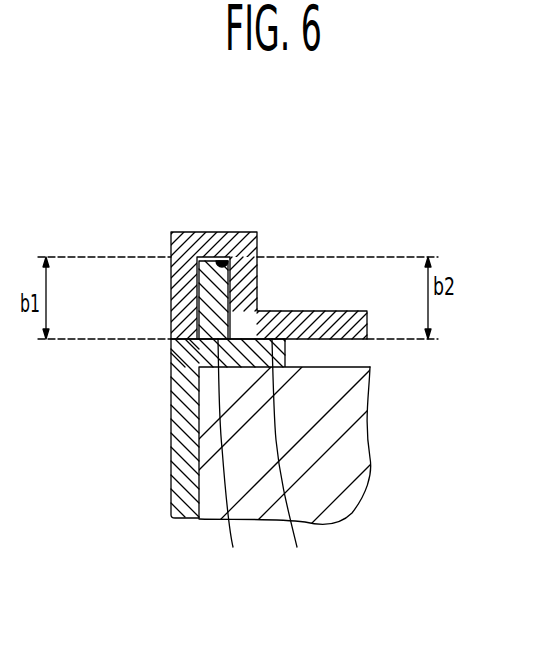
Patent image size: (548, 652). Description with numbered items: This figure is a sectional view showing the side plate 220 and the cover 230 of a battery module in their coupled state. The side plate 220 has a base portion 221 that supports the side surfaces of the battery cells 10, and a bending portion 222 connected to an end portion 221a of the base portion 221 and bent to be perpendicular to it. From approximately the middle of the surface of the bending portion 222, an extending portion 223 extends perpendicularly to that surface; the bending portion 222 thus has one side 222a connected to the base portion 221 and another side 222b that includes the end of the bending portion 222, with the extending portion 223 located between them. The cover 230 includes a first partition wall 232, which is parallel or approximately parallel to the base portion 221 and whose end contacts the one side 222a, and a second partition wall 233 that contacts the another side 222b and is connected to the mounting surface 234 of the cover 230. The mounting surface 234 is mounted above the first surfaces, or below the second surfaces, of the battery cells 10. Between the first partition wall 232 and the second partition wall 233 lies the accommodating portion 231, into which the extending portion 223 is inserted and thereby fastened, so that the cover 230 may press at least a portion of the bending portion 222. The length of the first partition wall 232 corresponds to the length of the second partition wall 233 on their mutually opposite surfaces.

The battery cells 10 is at (326, 443).
The side plate 220 is at (160, 478).
The base portion 221 is at (170, 433).
The end portion 221a is at (170, 339).
The bending portion 222 is at (265, 481).
The one side 222a is at (234, 459).
The another side 222b is at (296, 459).
The extending portion 223 is at (197, 287).
The cover 230 is at (265, 251).
The accommodating portion 231 is at (250, 256).
The first partition wall 232 is at (171, 258).
The second partition wall 233 is at (258, 283).
The mounting surface 234 is at (360, 318).